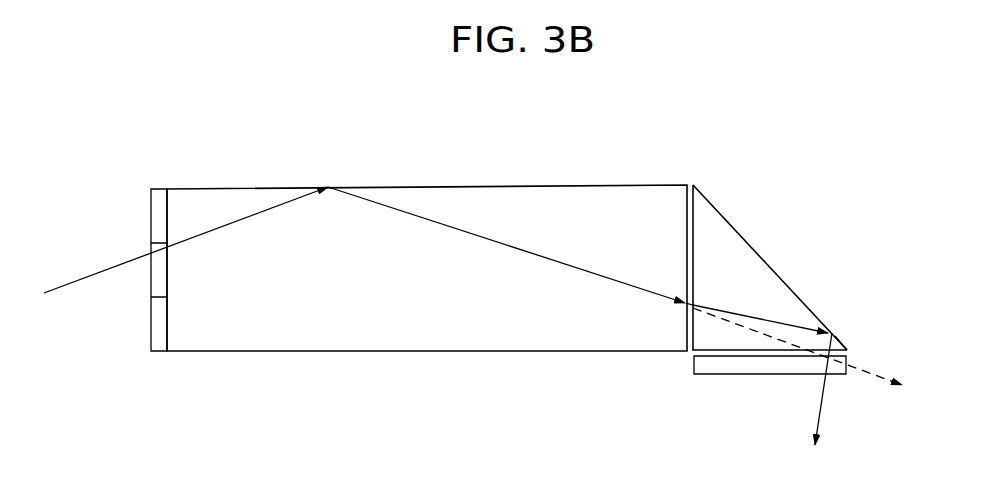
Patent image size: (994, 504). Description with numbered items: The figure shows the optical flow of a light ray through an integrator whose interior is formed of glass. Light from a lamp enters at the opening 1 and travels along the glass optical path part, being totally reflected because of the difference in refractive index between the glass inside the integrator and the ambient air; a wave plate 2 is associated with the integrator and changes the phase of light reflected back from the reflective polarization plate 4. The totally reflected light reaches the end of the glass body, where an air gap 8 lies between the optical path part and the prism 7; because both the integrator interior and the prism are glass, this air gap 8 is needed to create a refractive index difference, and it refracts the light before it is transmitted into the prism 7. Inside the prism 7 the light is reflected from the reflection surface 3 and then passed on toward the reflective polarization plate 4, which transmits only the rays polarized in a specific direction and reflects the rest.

The opening 1 is at (168, 289).
The wave plate 2 is at (168, 217).
The reflection surface 3 is at (151, 329).
The reflective polarization plate 4 is at (788, 362).
The prism 7 is at (727, 245).
The air gap 8 is at (842, 353).